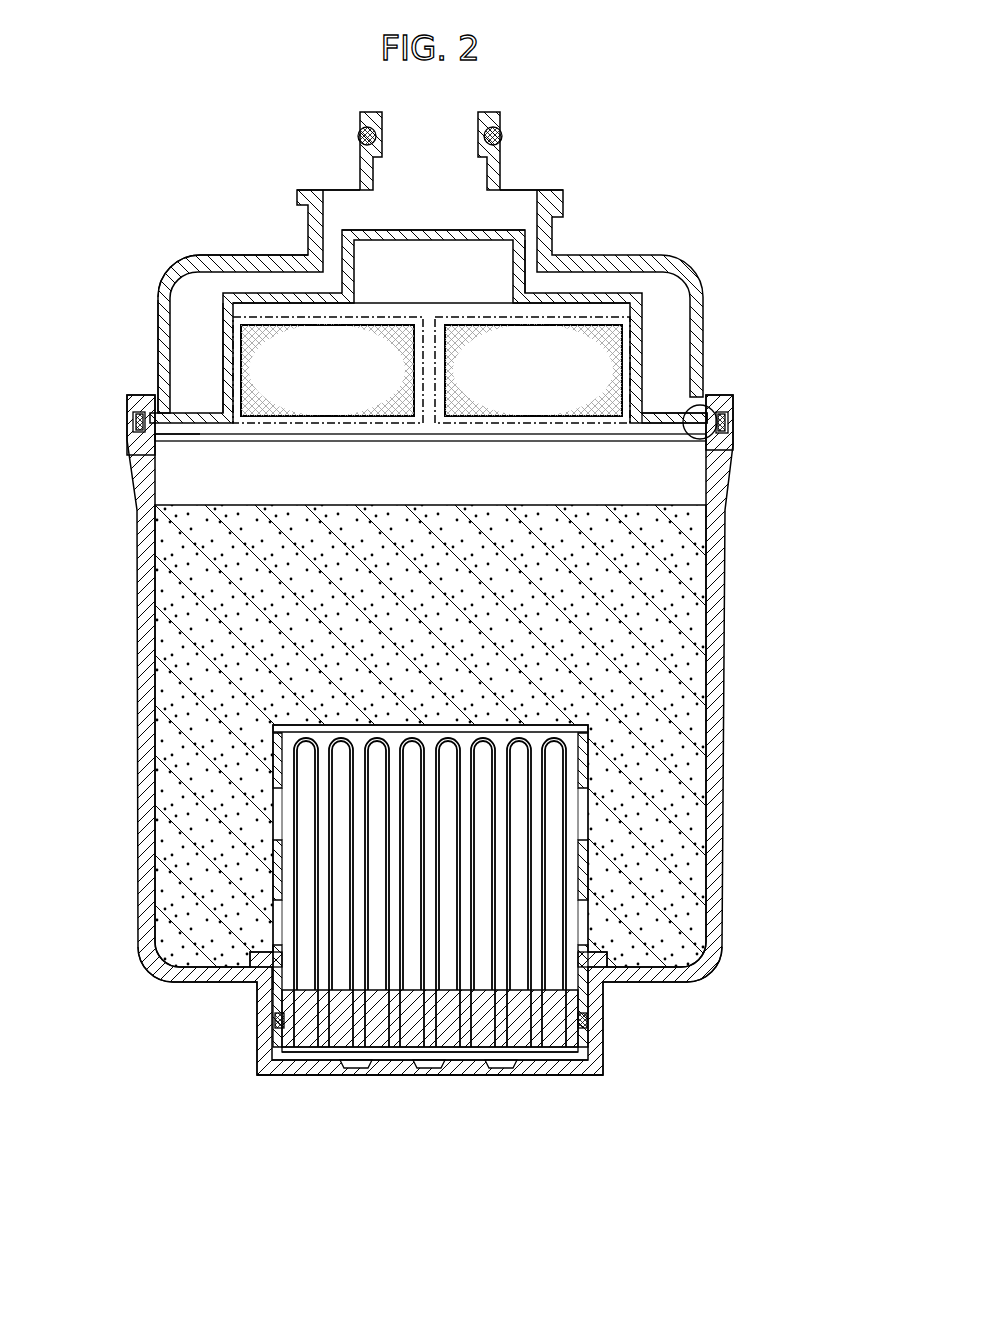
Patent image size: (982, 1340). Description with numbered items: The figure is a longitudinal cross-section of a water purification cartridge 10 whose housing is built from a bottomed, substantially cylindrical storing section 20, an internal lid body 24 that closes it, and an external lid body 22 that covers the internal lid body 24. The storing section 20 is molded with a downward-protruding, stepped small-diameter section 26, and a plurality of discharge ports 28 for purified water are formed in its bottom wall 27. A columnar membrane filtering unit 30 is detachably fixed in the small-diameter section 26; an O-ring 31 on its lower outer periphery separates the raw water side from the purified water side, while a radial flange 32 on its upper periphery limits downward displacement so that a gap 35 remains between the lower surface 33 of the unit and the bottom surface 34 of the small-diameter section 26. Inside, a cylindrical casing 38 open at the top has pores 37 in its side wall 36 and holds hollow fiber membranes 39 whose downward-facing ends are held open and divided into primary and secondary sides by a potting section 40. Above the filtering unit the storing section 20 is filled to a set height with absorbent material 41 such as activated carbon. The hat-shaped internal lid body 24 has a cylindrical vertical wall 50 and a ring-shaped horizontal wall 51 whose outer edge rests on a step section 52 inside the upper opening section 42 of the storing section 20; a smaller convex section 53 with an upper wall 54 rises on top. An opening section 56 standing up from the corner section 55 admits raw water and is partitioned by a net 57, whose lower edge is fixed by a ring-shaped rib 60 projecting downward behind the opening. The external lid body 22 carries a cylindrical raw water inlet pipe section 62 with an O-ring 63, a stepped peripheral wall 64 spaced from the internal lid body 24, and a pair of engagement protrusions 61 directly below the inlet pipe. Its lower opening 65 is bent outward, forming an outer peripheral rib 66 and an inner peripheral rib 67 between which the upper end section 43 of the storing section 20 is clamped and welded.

The water purification cartridge 10 is at (152, 128).
The storing section 20 is at (441, 763).
The external lid body 22 is at (403, 247).
The internal lid body 24 is at (433, 281).
The small-diameter section 26 is at (611, 1046).
The bottom wall 27 is at (547, 1078).
The discharge ports 28 is at (501, 1071).
The membrane filtering unit 30 is at (427, 889).
The O-ring 31 is at (590, 1022).
The flange 32 is at (605, 956).
The lower surface 33 is at (522, 1052).
The bottom surface 34 is at (553, 1053).
The gap 35 is at (293, 1056).
The side wall 36 is at (273, 768).
The pores 37 is at (273, 915).
The casing 38 is at (594, 764).
The hollow fiber membranes 39 is at (293, 930).
The potting section 40 is at (325, 1040).
The absorbent material 41 is at (178, 599).
The upper opening section 42 is at (692, 416).
The upper end section 43 is at (731, 398).
The vertical wall 50 is at (641, 312).
The horizontal wall 51 is at (665, 412).
The step section 52 is at (130, 402).
The convex section 53 is at (530, 270).
The upper wall 54 is at (490, 232).
The corner section 55 is at (218, 414).
The opening section 56 is at (283, 336).
The net 57 is at (166, 352).
The ring-shaped rib 60 is at (642, 436).
The engagement protrusions 61 is at (300, 208).
The cylindrical raw water inlet pipe section 62 is at (360, 165).
The O-ring 63 is at (503, 130).
The peripheral wall 64 is at (225, 262).
The lower opening 65 is at (190, 436).
The outer peripheral rib 66 is at (736, 418).
The inner peripheral rib 67 is at (715, 434).